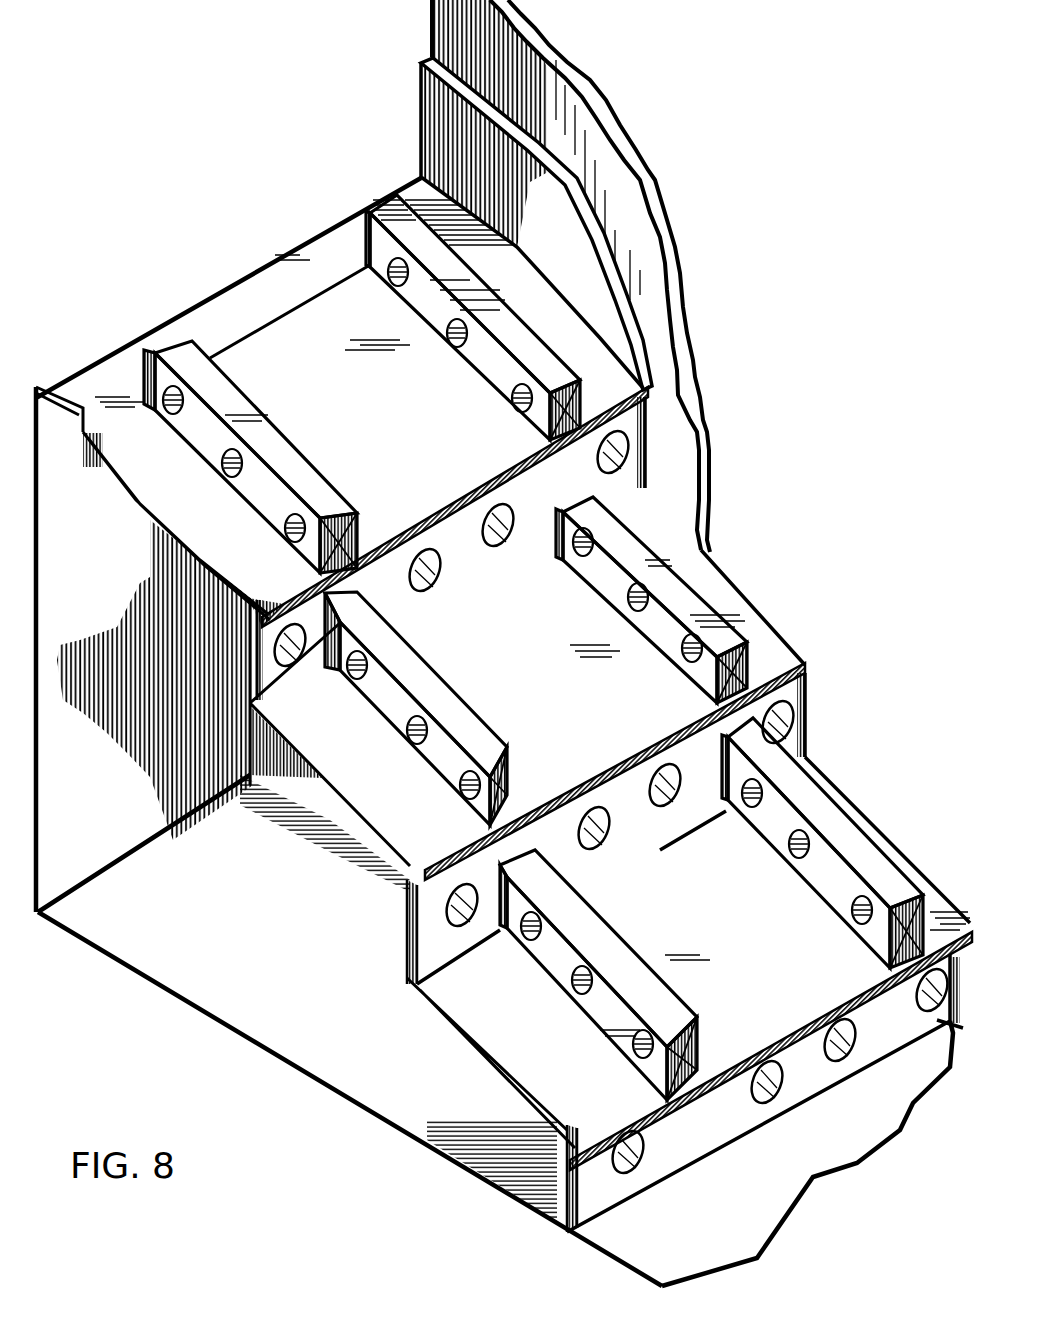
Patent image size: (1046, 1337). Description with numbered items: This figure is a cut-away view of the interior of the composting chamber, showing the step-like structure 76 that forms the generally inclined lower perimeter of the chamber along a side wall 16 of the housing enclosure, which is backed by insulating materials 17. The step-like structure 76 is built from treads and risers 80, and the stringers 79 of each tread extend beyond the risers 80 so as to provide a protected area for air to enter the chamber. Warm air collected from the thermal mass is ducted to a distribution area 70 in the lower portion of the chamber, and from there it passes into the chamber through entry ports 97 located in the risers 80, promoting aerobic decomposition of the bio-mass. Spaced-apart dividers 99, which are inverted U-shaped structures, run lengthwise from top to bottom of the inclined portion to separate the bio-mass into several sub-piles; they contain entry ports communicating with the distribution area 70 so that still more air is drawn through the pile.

The side wall 16 is at (612, 153).
The insulating materials 17 is at (436, 118).
The distribution area 70 is at (572, 400).
The step-like structure 76 is at (747, 309).
The stringers 79 is at (264, 640).
The risers 80 is at (636, 804).
The entry ports 97 is at (303, 638).
The dividers 99 is at (412, 238).